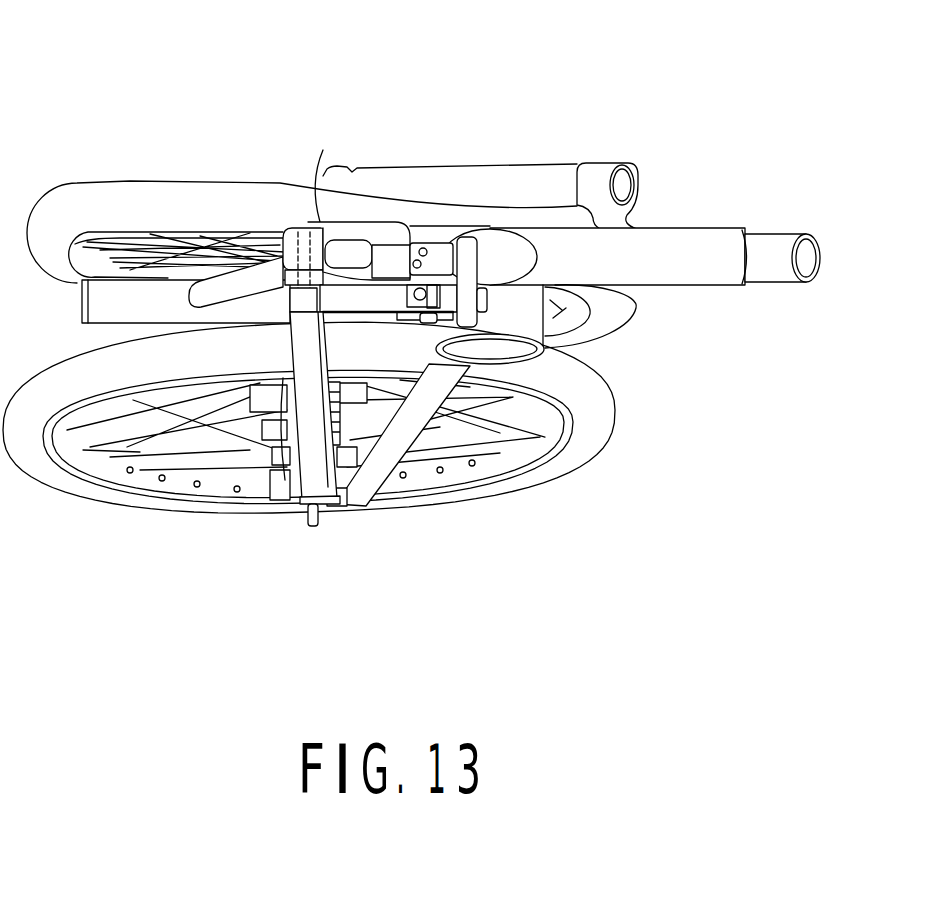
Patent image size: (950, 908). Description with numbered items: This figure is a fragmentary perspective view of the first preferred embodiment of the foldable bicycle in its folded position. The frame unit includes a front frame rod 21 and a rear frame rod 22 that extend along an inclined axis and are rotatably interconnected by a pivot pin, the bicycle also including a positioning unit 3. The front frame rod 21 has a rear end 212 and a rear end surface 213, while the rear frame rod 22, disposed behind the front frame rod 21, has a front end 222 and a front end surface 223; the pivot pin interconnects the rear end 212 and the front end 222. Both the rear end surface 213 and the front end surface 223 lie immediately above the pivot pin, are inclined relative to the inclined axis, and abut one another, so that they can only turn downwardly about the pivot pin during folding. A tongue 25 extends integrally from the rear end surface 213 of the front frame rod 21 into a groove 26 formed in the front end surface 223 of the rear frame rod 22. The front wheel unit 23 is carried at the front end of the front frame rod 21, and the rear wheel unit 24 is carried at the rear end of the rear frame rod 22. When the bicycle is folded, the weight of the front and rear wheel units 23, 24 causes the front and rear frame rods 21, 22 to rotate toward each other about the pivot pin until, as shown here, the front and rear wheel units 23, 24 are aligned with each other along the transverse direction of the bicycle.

The positioning unit 3 is at (376, 320).
The front frame rod 21 is at (690, 230).
The rear frame rod 22 is at (250, 227).
The front wheel unit 23 is at (80, 183).
The rear wheel unit 24 is at (505, 495).
The tongue 25 is at (387, 248).
The groove 26 is at (352, 222).
The rear end 212 is at (437, 226).
The rear end surface 213 is at (490, 228).
The front end 222 is at (415, 224).
The front end surface 223 is at (323, 175).